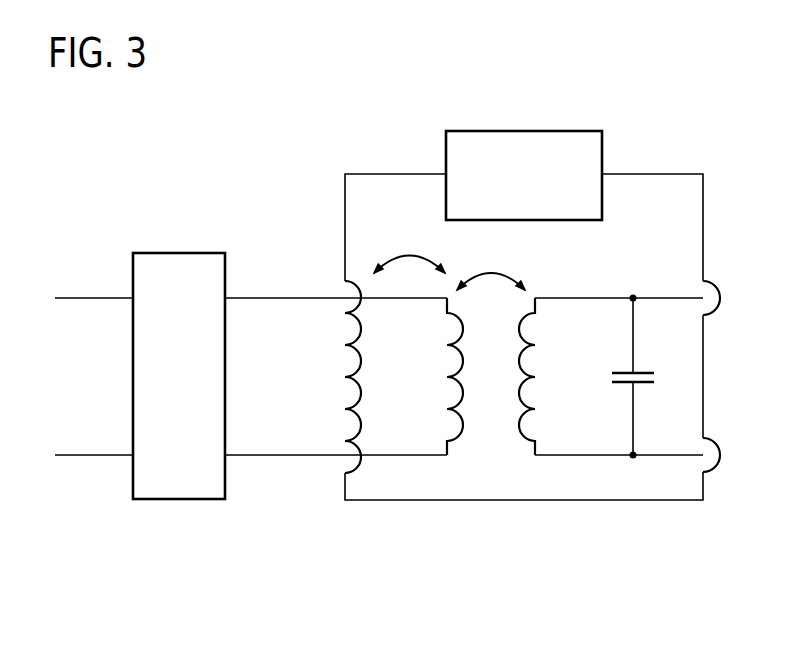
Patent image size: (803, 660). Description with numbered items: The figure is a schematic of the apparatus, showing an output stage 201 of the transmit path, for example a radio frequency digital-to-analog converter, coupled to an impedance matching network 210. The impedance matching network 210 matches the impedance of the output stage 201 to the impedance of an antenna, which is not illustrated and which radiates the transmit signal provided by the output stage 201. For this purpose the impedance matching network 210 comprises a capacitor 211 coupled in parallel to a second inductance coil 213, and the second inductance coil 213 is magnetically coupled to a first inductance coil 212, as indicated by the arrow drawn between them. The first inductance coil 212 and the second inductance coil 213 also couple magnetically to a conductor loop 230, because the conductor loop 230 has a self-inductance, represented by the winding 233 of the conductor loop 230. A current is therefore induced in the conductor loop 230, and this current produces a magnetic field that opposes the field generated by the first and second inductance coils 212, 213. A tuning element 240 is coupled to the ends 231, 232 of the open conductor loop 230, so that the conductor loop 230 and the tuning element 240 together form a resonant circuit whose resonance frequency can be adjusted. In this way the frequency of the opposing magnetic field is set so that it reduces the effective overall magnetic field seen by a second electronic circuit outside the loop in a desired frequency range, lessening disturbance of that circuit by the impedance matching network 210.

The output stage 201 is at (180, 500).
The tuning element 240 is at (522, 131).
The first end of the conductor loop 231 is at (446, 172).
The second end of the conductor loop 232 is at (602, 172).
The conductor loop 230 is at (525, 500).
The winding 233 is at (345, 372).
The first inductance coil 212 is at (455, 372).
The second inductance coil 213 is at (520, 372).
The impedance matching network 210 is at (662, 298).
The capacitor 211 is at (646, 385).